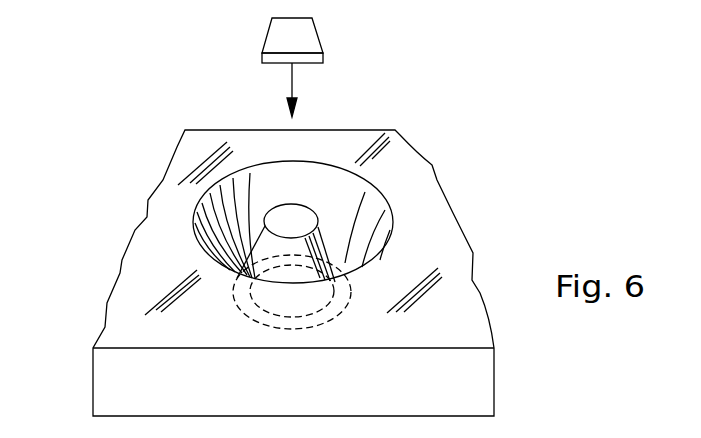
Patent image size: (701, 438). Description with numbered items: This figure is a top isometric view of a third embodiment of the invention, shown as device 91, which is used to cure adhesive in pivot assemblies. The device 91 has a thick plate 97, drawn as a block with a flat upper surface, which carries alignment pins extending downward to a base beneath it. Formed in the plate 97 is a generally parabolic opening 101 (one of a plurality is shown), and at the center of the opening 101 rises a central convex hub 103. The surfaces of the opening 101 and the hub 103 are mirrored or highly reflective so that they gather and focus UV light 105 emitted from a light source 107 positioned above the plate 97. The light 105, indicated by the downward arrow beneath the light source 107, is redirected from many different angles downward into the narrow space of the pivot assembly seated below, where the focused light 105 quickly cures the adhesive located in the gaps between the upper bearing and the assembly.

The device 91 is at (147, 133).
The thick plate 97 is at (430, 245).
The parabolic opening 101 is at (355, 190).
The central convex hub 103 is at (262, 238).
The UV light 105 is at (295, 85).
The light source 107 is at (312, 37).